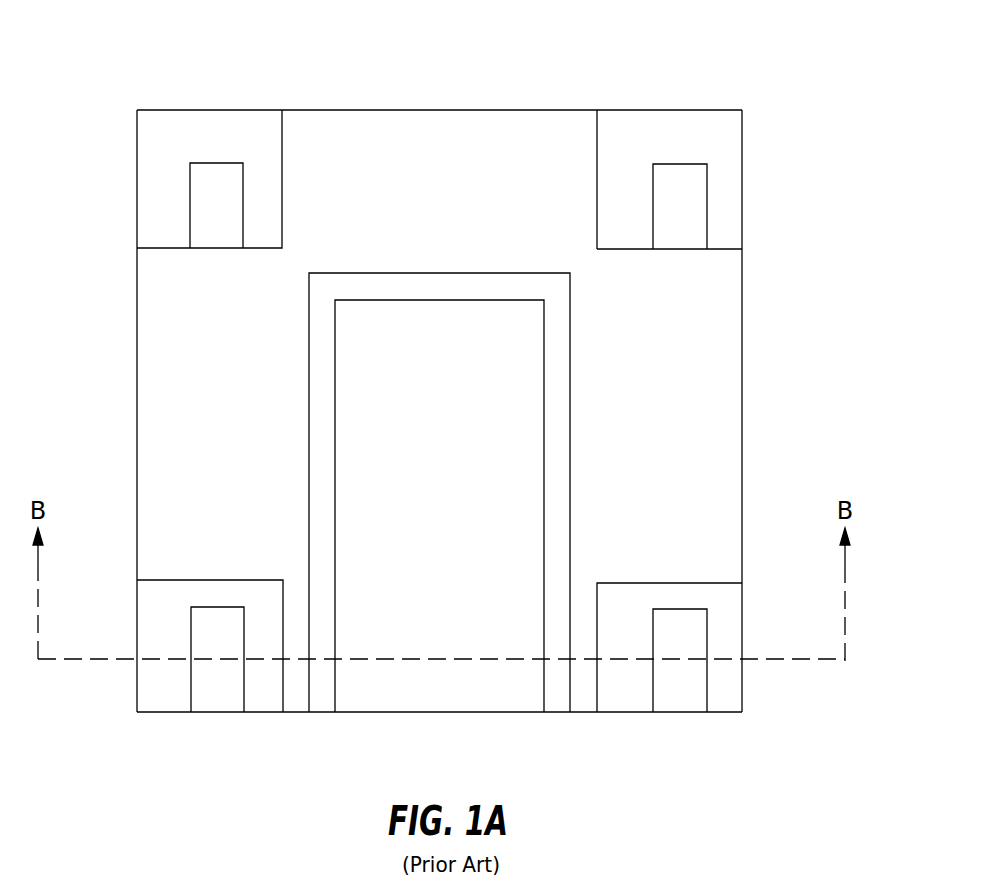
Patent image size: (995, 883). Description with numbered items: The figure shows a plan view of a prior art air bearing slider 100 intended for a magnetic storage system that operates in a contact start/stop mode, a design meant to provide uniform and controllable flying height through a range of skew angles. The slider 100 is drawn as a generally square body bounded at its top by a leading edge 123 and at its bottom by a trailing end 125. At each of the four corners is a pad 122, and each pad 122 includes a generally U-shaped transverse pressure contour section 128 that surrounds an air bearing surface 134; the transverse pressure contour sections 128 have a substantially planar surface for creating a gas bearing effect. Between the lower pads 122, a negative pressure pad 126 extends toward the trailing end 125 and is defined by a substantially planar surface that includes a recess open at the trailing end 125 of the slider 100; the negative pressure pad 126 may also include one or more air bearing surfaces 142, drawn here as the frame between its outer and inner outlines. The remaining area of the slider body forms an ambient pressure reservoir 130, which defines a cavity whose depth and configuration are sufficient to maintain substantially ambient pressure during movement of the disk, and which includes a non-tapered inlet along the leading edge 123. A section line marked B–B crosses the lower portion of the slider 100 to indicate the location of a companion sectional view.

The slider 100 is at (762, 70).
The pad 122 is at (137, 147).
The leading edge 123 is at (540, 110).
The trailing end 125 is at (515, 712).
The negative pressure pad 126 is at (308, 263).
The transverse pressure contour section 128 is at (733, 208).
The ambient pressure reservoir 130 is at (145, 423).
The air bearing surface 134 is at (686, 242).
The air bearing surface 142 is at (322, 705).